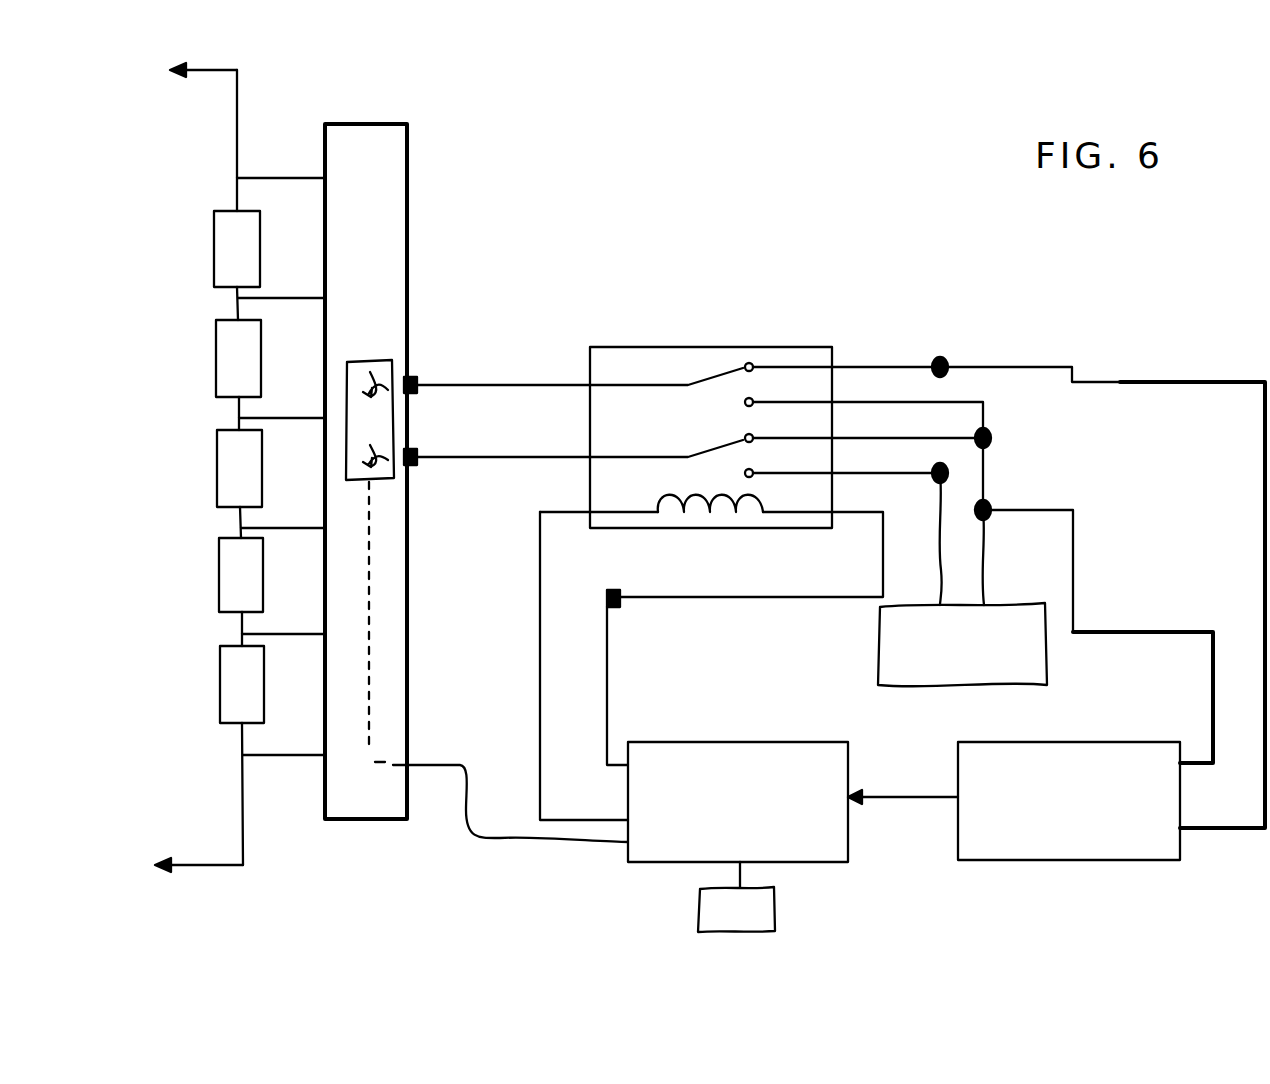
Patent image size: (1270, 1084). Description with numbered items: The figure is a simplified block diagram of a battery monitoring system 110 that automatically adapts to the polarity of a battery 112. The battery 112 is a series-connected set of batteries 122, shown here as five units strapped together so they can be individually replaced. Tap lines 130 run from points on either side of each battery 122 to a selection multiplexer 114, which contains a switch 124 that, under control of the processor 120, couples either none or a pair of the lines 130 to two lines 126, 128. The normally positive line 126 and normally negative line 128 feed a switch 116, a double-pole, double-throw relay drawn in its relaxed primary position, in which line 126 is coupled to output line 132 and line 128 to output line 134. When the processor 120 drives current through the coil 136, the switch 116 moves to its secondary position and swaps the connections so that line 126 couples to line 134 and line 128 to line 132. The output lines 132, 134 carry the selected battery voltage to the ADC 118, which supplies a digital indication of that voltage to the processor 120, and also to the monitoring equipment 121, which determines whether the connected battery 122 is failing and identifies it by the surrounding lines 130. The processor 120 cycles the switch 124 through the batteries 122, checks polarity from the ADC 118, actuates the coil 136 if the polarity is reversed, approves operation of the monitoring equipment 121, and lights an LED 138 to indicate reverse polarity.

The battery monitoring system 110 is at (912, 205).
The battery 112 is at (156, 566).
The selection multiplexer (MUX) 114 is at (407, 262).
The switch 116 is at (779, 347).
The ADC 118 is at (1030, 742).
The processor 120 is at (713, 742).
The monitoring equipment 121 is at (878, 628).
The batteries 122 is at (196, 698).
The switch 124 is at (388, 348).
The line 126 is at (480, 387).
The line 128 is at (473, 460).
The lines 130 is at (261, 178).
The output line 132 is at (1135, 382).
The output line 134 is at (1130, 632).
The coil 136 is at (680, 506).
The LED 138 is at (776, 912).